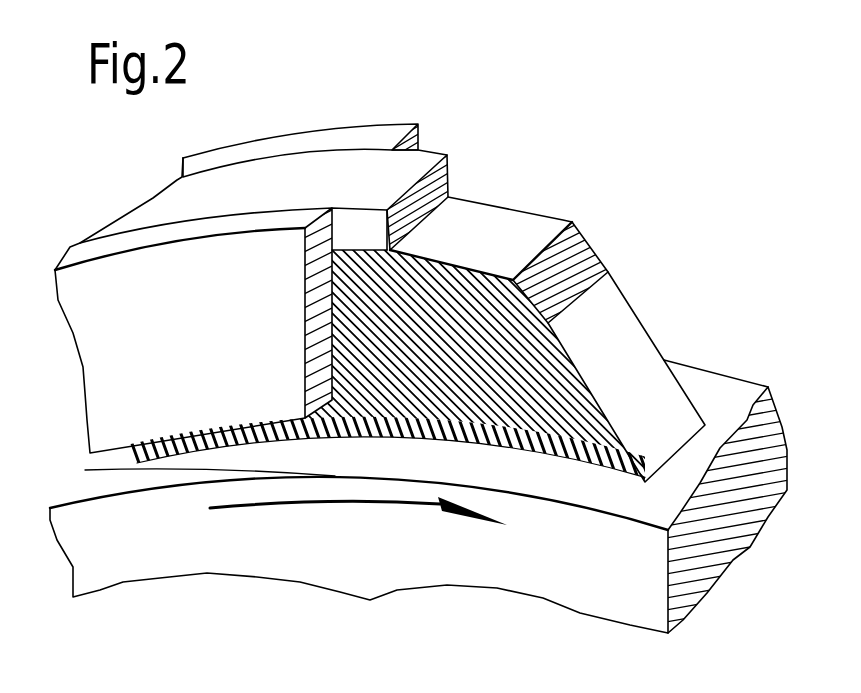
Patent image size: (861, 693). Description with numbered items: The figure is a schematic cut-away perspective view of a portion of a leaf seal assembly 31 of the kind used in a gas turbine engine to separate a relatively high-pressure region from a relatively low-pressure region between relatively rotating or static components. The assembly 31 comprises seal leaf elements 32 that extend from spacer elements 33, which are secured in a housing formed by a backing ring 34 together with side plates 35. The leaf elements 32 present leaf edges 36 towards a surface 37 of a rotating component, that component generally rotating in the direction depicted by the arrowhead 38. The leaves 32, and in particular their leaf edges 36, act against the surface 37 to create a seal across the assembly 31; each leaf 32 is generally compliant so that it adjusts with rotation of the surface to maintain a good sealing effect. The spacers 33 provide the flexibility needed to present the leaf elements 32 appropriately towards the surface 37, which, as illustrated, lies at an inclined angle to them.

The leaf seal assembly 31 is at (482, 163).
The seal leaf element 32 is at (612, 320).
The spacer element 33 is at (557, 213).
The backing ring 34 is at (177, 200).
The side plate 35 is at (292, 143).
The leaf edge 36 is at (688, 450).
The surface 37 is at (547, 486).
The arrowhead 38 is at (337, 503).